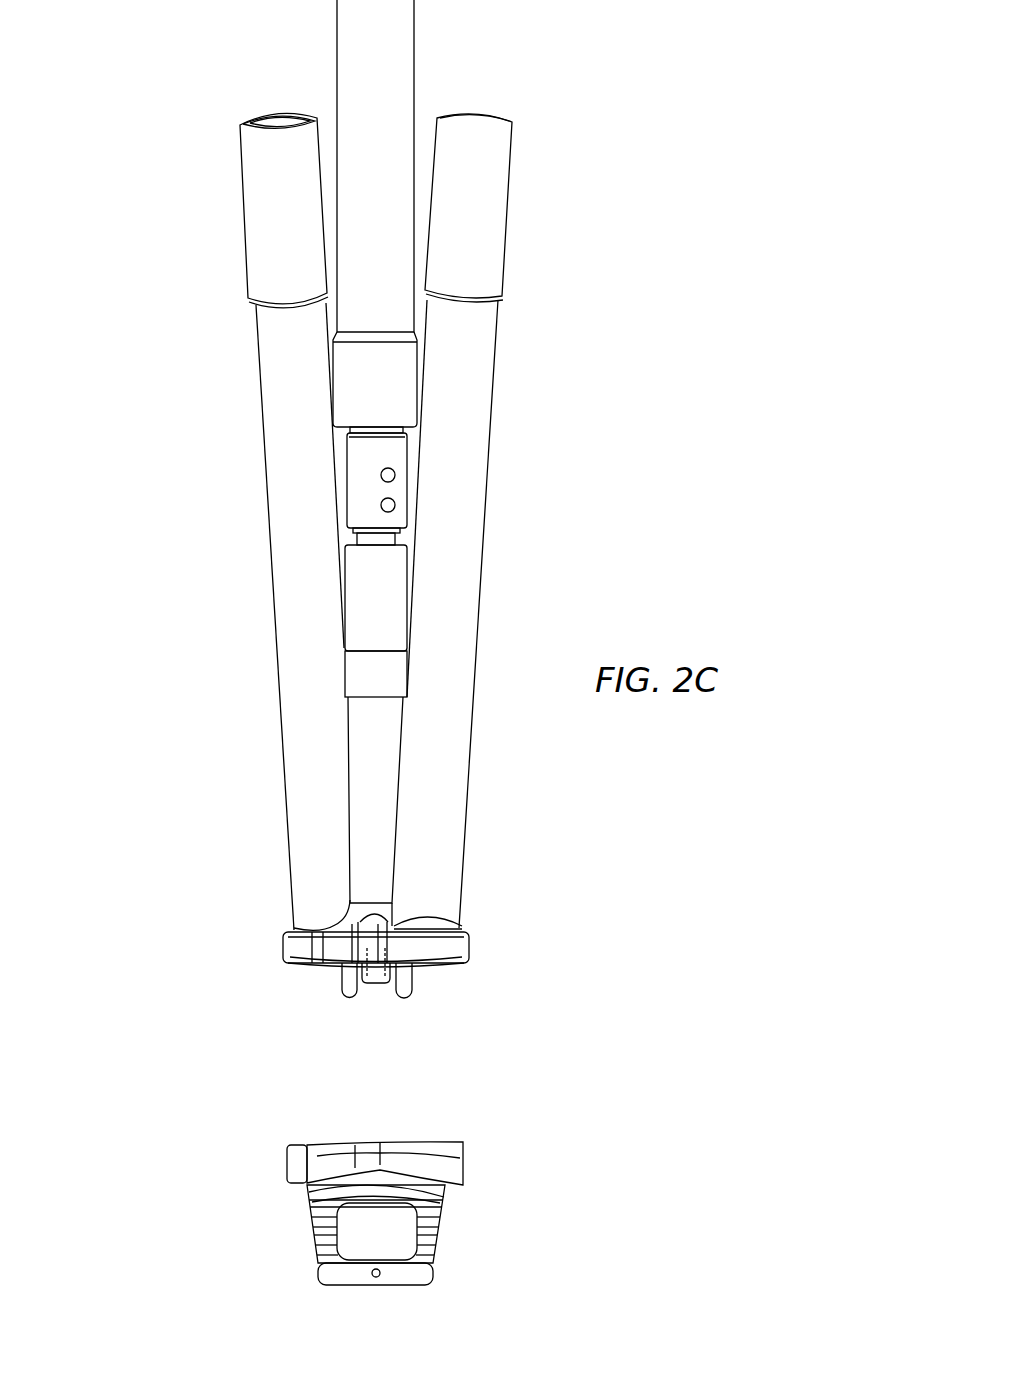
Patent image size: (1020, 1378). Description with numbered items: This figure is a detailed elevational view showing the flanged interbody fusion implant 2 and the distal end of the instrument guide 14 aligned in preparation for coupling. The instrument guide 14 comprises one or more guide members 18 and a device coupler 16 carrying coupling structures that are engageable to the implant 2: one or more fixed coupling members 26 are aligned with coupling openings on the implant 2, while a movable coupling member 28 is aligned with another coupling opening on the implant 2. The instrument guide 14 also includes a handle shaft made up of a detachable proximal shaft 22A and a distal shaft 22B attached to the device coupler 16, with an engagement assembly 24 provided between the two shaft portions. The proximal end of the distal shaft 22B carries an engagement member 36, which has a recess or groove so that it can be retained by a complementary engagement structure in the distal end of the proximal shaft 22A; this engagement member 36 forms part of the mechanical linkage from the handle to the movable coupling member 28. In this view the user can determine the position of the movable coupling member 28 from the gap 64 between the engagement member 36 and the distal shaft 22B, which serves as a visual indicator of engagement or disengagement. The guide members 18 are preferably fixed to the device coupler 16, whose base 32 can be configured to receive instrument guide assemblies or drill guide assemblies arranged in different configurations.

The instrument guide 14 is at (748, 346).
The proximal shaft 22A is at (383, 235).
The guide members 18 is at (292, 372).
The engagement member 36 is at (383, 458).
The engagement assembly 24 is at (330, 523).
The gap 64 is at (383, 537).
The distal shaft 22B is at (373, 729).
The base 32 is at (352, 948).
The device coupler 16 is at (482, 952).
The fixed coupling members 26 is at (343, 980).
The movable coupling member 28 is at (368, 980).
The implant 2 is at (573, 1215).